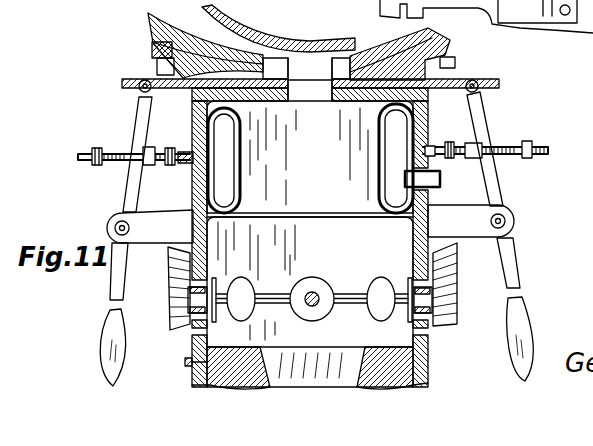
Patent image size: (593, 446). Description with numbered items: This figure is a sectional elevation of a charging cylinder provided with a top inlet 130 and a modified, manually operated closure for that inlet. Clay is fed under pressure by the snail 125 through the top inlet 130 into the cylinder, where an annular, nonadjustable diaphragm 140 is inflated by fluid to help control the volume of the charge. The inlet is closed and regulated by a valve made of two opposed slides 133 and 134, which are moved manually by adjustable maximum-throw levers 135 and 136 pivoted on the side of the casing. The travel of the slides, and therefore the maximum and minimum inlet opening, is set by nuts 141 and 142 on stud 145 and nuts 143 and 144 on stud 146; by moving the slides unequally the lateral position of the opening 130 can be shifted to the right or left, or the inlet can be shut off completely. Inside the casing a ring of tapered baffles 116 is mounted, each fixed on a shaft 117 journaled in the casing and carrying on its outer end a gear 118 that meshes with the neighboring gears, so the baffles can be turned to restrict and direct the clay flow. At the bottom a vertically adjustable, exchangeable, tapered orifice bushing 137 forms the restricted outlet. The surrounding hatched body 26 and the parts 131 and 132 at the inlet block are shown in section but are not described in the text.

The curved frame block 26 is at (148, 22).
The snail 125 is at (292, 40).
The wedge block 132 is at (357, 57).
The bolt 131 is at (447, 51).
The top inlet 130 is at (309, 90).
The slide 134 is at (343, 96).
The slide 133 is at (284, 103).
The diaphragm 140 is at (382, 172).
The nut 141 is at (97, 148).
The nut 142 is at (170, 148).
The nut 143 is at (449, 142).
The nut 144 is at (526, 141).
The stud 145 is at (79, 158).
The stud 146 is at (549, 151).
The lever 135 is at (126, 183).
The lever 136 is at (497, 186).
The baffle 116 is at (261, 292).
The shaft 117 is at (318, 296).
The gear 118 is at (172, 328).
The orifice bushing 137 is at (413, 363).